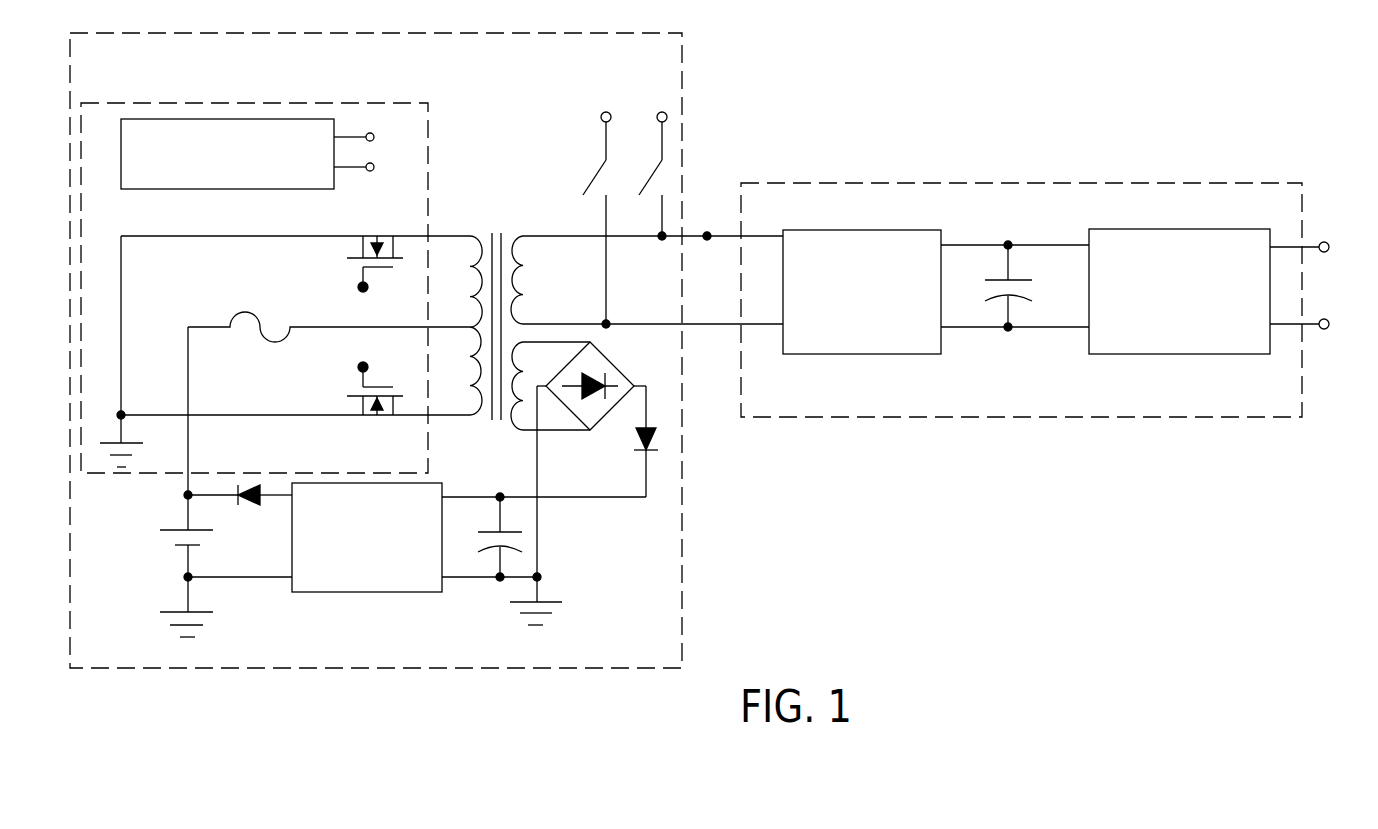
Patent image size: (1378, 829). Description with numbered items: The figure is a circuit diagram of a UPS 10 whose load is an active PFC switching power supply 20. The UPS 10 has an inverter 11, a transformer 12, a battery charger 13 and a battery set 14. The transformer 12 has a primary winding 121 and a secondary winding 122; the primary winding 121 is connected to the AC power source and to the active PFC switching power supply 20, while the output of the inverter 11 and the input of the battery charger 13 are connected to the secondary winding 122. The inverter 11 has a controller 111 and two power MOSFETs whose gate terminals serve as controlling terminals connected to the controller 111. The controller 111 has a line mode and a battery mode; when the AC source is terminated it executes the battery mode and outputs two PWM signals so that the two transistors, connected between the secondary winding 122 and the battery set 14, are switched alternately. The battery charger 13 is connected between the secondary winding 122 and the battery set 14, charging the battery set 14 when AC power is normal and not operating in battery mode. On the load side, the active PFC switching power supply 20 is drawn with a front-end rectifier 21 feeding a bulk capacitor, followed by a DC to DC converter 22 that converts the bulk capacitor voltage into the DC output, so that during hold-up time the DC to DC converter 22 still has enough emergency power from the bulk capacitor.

The UPS 10 is at (682, 596).
The inverter 11 is at (405, 103).
The controller 111 is at (228, 119).
The transformer 12 is at (500, 215).
The primary winding 121 is at (520, 236).
The secondary winding 122 is at (474, 236).
The battery charger 13 is at (342, 592).
The battery set 14 is at (162, 531).
The active PFC switching power supply 20 is at (1052, 183).
The front-end rectifier 21 is at (862, 354).
The DC to DC converter 22 is at (1145, 354).